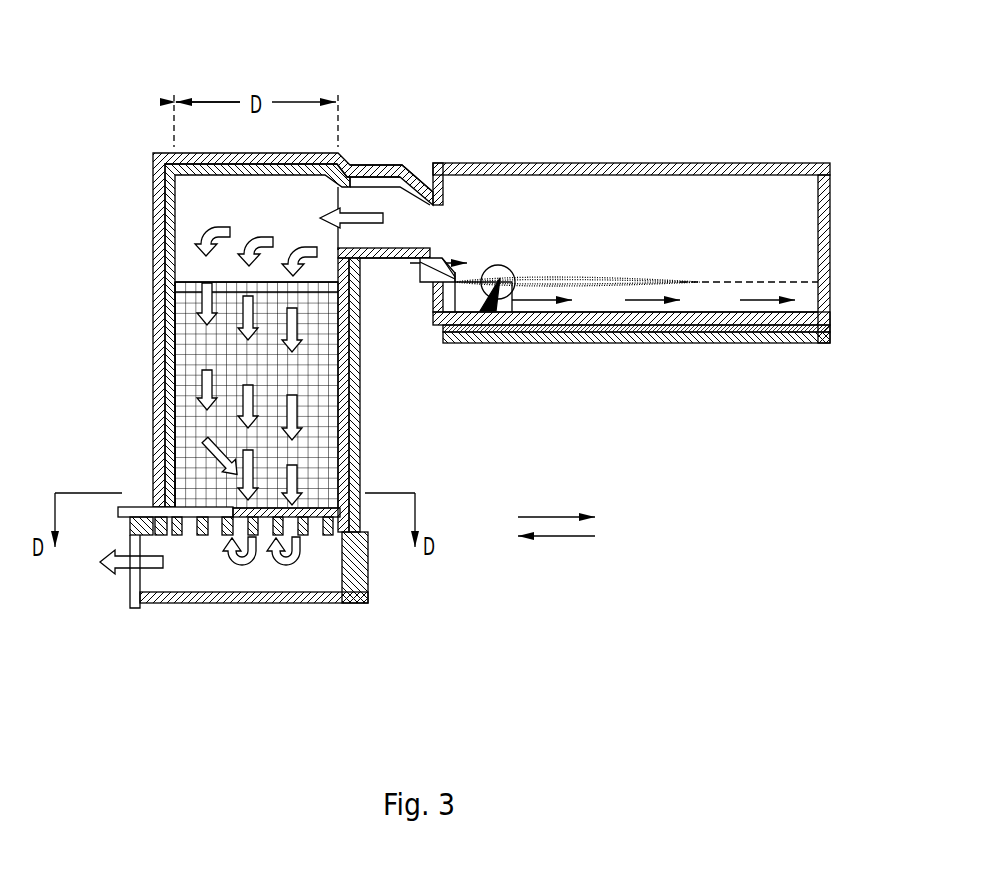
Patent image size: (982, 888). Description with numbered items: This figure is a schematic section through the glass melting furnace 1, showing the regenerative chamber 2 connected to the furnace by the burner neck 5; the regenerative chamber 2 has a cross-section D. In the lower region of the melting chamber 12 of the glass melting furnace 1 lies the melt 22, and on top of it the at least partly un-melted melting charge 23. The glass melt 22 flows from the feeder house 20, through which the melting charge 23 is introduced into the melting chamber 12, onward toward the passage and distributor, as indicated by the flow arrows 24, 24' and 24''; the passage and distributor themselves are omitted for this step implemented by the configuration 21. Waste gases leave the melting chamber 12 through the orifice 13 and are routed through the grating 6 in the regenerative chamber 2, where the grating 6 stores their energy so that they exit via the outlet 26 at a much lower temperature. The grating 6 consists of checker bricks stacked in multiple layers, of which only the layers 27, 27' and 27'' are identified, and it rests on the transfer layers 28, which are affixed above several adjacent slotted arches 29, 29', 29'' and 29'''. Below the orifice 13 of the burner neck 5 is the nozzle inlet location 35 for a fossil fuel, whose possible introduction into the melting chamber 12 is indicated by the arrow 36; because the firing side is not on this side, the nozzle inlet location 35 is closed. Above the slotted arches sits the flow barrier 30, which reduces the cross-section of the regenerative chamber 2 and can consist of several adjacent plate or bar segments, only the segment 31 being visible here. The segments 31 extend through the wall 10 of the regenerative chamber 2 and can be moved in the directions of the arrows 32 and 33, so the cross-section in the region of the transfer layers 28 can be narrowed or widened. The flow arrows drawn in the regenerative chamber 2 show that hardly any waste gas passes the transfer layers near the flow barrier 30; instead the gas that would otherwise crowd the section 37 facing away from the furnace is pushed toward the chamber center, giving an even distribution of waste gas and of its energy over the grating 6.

The glass melting furnace 1 is at (787, 150).
The regenerative chamber 2 is at (130, 147).
The burner neck 5 is at (371, 160).
The grating 6 is at (185, 377).
The wall 10 is at (152, 193).
The melting chamber 12 is at (624, 195).
The orifice 13 is at (437, 222).
The feeder house 20 is at (493, 270).
The configuration 21 is at (556, 82).
The melt 22 is at (593, 300).
The melting charge 23 is at (541, 278).
The flow arrow 24 is at (542, 348).
The flow arrow 24' is at (652, 348).
The flow arrow 24'' is at (767, 348).
The outlet 26 is at (128, 575).
The layer 27 is at (223, 395).
The layer 27' is at (223, 294).
The layer 27'' is at (223, 268).
The transfer layers 28 is at (335, 513).
The slotted arch 29 is at (173, 582).
The slotted arch 29' is at (213, 595).
The slotted arch 29'' is at (247, 581).
The slotted arch 29''' is at (293, 593).
The flow barrier 30 is at (110, 523).
The segment 31 is at (140, 507).
The arrow 32 is at (552, 515).
The arrow 33 is at (567, 537).
The nozzle inlet location 35 is at (432, 276).
The arrow 36 is at (411, 268).
The section 37 is at (175, 433).